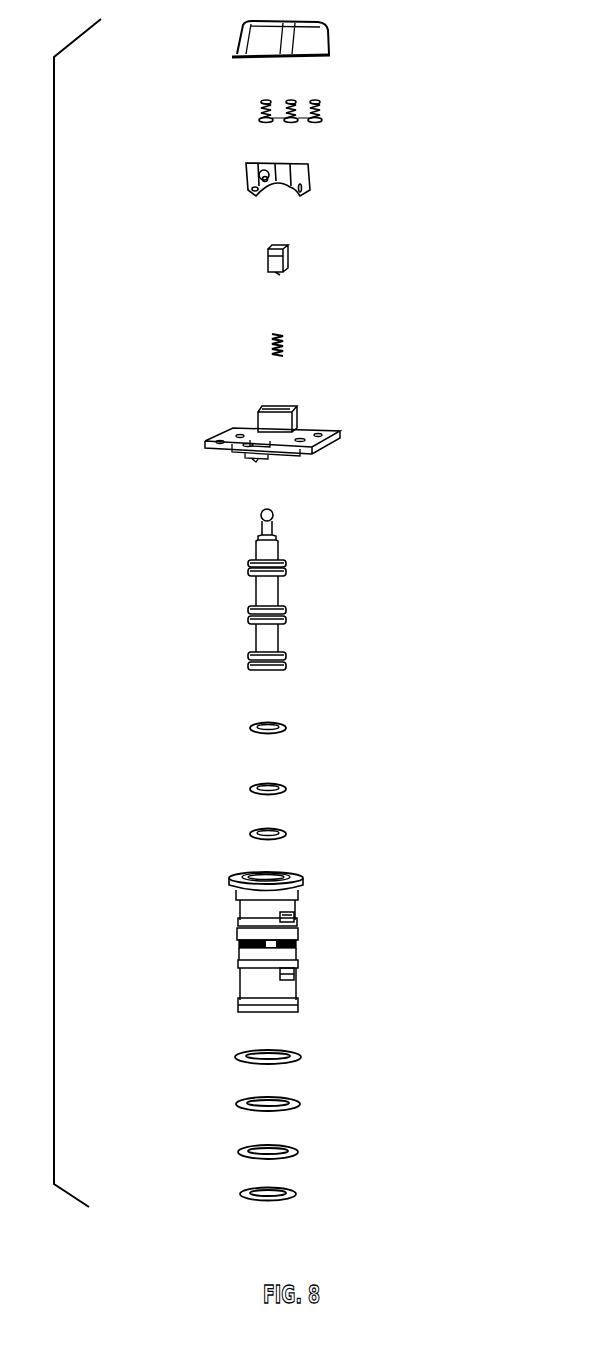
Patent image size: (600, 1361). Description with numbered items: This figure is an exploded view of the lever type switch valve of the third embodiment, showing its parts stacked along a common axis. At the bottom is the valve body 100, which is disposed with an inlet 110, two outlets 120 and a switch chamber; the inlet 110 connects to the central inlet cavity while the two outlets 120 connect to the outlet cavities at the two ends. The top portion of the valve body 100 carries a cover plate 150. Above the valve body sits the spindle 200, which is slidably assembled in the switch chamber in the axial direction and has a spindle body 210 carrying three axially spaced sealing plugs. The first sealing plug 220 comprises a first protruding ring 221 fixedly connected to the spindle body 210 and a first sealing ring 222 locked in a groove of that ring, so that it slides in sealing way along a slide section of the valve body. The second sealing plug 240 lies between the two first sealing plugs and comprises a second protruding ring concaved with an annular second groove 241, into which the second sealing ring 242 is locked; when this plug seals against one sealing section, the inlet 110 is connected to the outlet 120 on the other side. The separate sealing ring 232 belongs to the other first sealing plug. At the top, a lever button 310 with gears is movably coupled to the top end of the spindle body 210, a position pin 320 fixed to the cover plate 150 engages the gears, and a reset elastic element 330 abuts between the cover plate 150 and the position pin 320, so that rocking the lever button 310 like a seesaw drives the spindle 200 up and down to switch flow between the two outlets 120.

The lever button 310 is at (330, 48).
The position pin 320 is at (290, 264).
The reset elastic element 330 is at (283, 345).
The cover plate 150 is at (335, 437).
The spindle 200 is at (259, 589).
The first sealing plug 220 is at (287, 562).
The first protruding ring 221 is at (287, 574).
The spindle body 210 is at (268, 597).
The second groove 241 is at (287, 610).
The second sealing plug 240 is at (287, 621).
The first sealing ring 222 is at (286, 728).
The second sealing ring 242 is at (286, 790).
The O-ring 232 is at (286, 834).
The valve body 100 is at (335, 953).
The inlet 110 is at (297, 943).
The outlet 120 is at (296, 916).